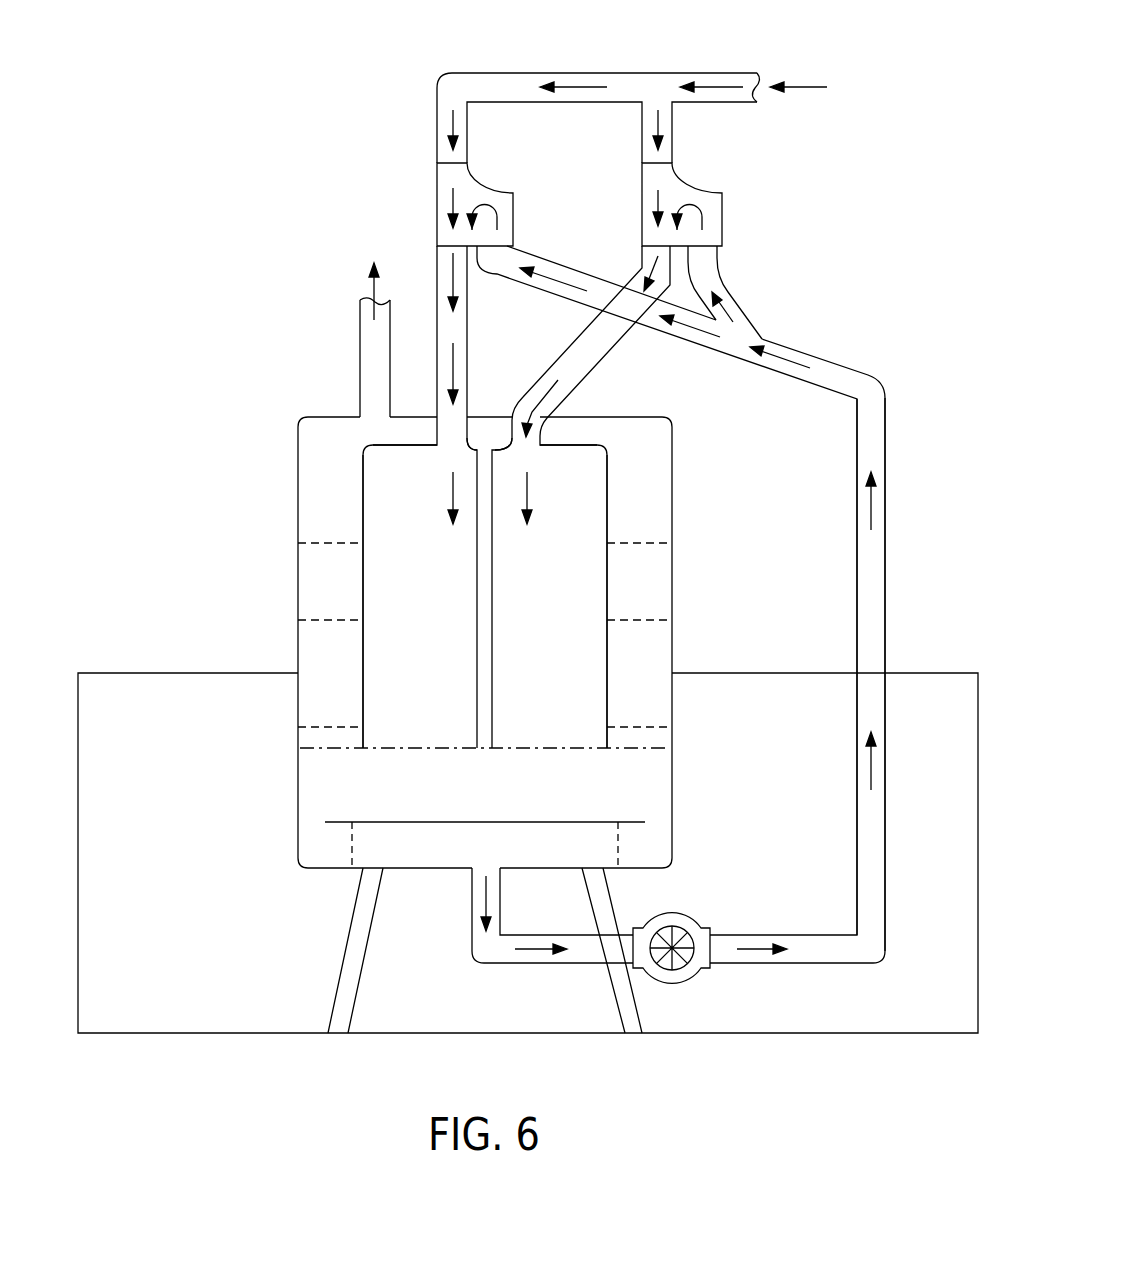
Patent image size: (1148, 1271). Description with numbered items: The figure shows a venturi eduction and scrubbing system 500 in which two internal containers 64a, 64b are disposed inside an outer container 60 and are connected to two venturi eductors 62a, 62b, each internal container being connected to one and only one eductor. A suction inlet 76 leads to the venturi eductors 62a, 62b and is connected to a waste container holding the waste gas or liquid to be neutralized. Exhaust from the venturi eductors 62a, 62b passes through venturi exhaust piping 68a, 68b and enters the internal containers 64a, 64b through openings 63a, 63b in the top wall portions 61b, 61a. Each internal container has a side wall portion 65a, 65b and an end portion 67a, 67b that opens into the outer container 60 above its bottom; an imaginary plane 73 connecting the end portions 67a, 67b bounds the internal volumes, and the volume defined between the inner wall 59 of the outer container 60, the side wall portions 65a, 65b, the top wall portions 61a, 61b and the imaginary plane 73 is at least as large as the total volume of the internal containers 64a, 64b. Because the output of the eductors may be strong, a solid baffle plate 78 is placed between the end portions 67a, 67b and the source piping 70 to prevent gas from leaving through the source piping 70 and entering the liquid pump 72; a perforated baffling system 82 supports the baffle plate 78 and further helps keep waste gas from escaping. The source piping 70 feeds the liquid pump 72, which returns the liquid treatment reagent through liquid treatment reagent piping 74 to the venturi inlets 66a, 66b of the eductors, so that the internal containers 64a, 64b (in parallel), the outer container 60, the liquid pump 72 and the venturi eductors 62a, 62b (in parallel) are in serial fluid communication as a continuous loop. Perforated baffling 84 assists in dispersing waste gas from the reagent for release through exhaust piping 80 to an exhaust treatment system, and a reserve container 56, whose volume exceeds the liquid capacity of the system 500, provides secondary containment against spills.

The venturi eduction and scrubbing system 500 is at (300, 204).
The suction inlet 76 is at (677, 73).
The venturi eductor 62a is at (513, 200).
The venturi eductor 62b is at (722, 200).
The venturi inlet 66a is at (530, 257).
The venturi inlet 66b is at (728, 290).
The venturi exhaust piping 68a is at (437, 270).
The venturi exhaust piping 68b is at (641, 272).
The exhaust piping 80 is at (360, 330).
The opening 63a is at (468, 438).
The opening 63b is at (543, 438).
The top wall portion 61a is at (592, 438).
The top wall portion 61b is at (403, 442).
The internal container 64a is at (362, 502).
The internal container 64b is at (608, 603).
The side wall portion 65a is at (362, 610).
The side wall portion 65b is at (608, 665).
The inner wall 59 is at (665, 482).
The outer container 60 is at (297, 610).
The end portion 67a is at (362, 747).
The end portion 67b is at (608, 747).
The perforated baffling 84 is at (308, 727).
The imaginary plane 73 is at (352, 749).
The solid baffle plate 78 is at (597, 822).
The perforated baffling system 82 is at (615, 838).
The source piping 70 is at (470, 940).
The liquid pump 72 is at (712, 967).
The liquid treatment reagent piping 74 is at (886, 927).
The reserve container 56 is at (918, 673).